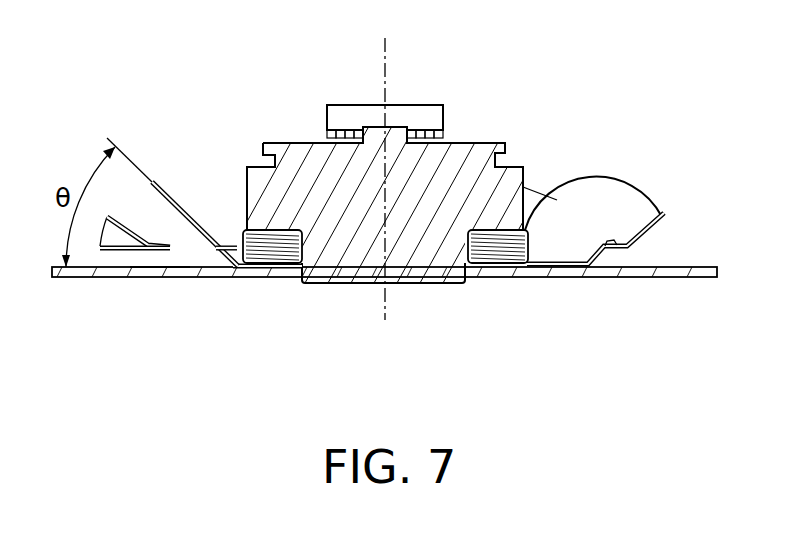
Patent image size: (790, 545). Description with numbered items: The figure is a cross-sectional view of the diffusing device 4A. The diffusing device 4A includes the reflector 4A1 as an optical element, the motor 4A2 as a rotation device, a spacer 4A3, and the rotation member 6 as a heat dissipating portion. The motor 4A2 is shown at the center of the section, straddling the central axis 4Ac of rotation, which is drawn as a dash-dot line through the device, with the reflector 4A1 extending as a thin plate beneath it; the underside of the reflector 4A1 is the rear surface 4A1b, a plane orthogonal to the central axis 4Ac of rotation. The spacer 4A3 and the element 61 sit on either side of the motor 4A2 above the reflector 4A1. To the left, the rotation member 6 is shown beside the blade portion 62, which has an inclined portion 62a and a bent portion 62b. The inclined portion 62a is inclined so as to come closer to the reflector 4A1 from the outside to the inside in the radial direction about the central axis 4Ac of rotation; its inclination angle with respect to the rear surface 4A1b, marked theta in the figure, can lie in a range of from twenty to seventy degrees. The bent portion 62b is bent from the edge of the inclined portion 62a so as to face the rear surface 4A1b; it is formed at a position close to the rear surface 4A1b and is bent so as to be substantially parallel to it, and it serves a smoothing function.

The diffusing device 4A is at (648, 60).
The central axis of rotation 4Ac is at (387, 50).
The reflector 4A1 is at (78, 278).
The rear surface 4A1b is at (158, 268).
The motor 4A2 is at (512, 175).
The spacer 4A3 is at (500, 254).
The rotation member 6 is at (158, 208).
The terminal 61 is at (265, 270).
The blade portion 62 is at (180, 158).
The inclined portion 62a is at (170, 180).
The bent portion 62b is at (232, 242).